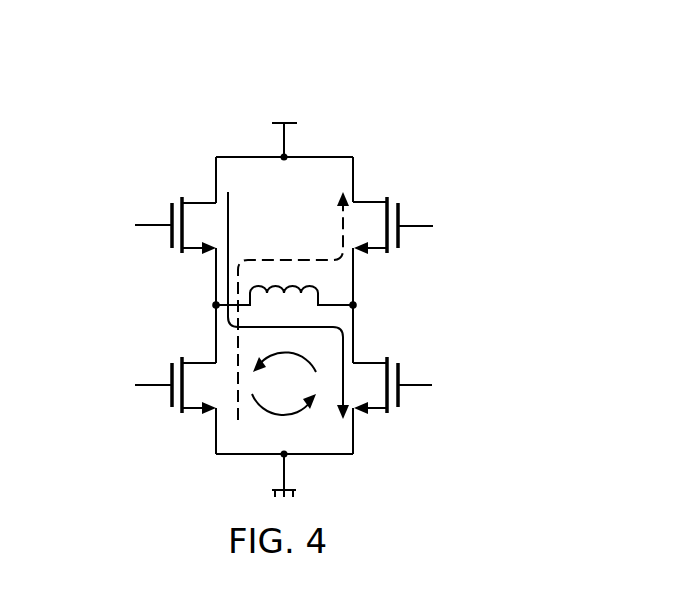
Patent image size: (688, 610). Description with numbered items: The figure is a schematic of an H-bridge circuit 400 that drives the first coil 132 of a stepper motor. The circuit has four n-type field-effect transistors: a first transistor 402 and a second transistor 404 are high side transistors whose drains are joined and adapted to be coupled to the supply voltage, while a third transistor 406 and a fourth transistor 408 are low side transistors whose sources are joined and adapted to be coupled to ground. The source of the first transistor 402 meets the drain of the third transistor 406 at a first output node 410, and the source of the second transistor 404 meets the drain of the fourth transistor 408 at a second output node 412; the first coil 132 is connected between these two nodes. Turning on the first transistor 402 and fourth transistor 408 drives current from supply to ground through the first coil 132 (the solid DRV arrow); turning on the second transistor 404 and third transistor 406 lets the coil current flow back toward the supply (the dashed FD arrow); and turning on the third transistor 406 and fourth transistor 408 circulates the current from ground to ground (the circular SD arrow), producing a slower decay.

The H-bridge circuit 400 is at (372, 96).
The first transistor 402 is at (170, 216).
The second transistor 404 is at (403, 216).
The third transistor 406 is at (170, 397).
The fourth transistor 408 is at (401, 397).
The first output node 410 is at (213, 308).
The second output node 412 is at (358, 310).
The first coil 132 is at (318, 292).